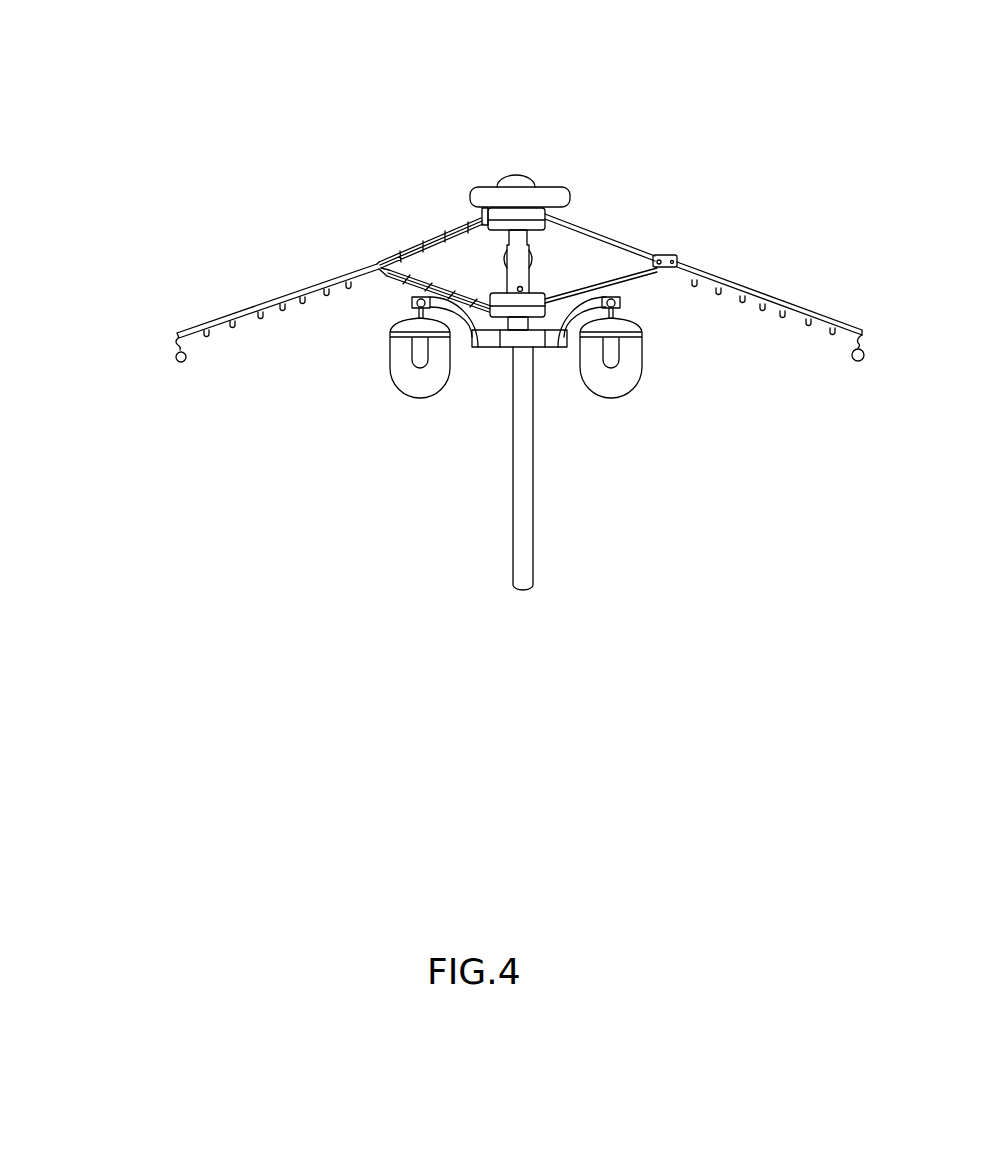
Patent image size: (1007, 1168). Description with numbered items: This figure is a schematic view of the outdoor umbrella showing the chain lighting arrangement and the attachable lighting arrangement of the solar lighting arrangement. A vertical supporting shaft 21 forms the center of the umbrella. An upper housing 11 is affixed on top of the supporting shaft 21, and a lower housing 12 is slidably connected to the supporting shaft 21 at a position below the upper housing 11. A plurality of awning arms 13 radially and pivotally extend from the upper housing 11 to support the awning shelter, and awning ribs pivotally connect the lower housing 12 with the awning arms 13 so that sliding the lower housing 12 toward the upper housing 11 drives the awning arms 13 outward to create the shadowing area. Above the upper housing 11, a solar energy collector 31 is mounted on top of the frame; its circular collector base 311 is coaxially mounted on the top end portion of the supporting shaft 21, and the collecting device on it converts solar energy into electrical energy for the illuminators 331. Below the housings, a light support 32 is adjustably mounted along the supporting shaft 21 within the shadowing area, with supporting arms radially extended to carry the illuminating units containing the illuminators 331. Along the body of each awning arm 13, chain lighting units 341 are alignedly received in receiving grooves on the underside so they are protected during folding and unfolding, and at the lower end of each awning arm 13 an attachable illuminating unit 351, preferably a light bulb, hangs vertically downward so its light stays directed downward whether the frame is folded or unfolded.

The upper housing 11 is at (478, 198).
The collector base 311 is at (497, 222).
The solar energy collector 31 is at (518, 177).
The lower housing 12 is at (527, 303).
The chain lighting units 341 is at (763, 304).
The attachable illuminating unit 351 is at (856, 361).
The illuminators 331 is at (423, 360).
The light support 32 is at (513, 342).
The supporting shaft 21 is at (523, 567).
The awning arms 13 is at (709, 500).